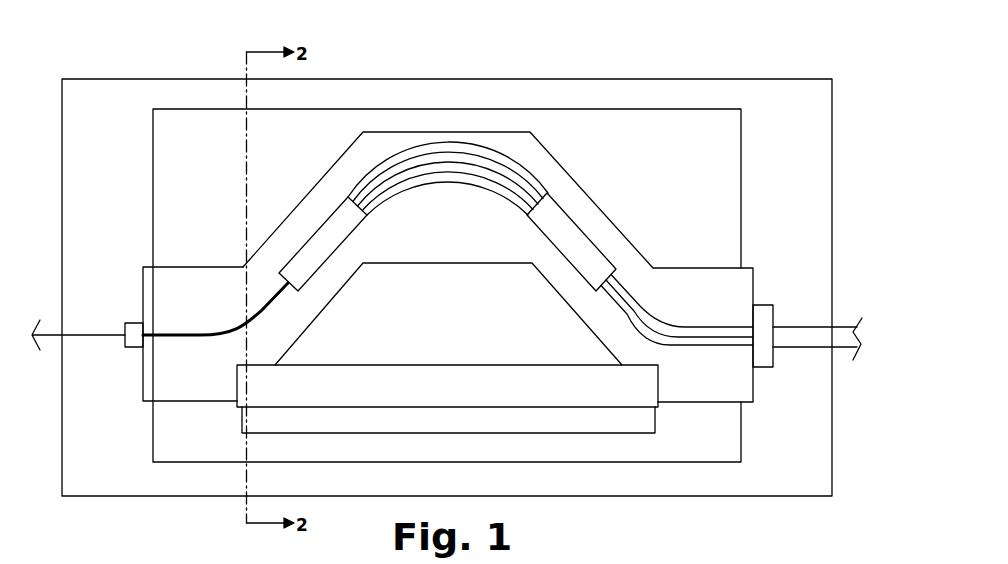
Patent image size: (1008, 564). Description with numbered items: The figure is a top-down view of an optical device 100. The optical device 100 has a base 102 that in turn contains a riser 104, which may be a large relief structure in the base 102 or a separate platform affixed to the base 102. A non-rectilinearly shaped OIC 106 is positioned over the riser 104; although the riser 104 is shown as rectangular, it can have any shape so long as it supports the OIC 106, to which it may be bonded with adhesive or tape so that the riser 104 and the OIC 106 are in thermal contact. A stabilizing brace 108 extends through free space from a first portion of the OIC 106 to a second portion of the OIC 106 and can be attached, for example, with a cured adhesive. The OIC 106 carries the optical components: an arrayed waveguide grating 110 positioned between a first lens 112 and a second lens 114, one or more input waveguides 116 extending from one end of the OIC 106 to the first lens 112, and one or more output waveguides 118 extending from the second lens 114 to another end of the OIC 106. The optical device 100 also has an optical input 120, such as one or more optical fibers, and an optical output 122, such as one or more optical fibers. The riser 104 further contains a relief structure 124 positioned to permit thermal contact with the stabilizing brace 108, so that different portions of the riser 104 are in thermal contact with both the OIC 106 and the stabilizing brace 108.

The optical device 100 is at (801, 70).
The base 102 is at (802, 465).
The riser 104 is at (723, 128).
The non-rectilinearly shaped OIC 106 is at (163, 290).
The stabilizing brace 108 is at (588, 395).
The arrayed waveguide grating 110 is at (483, 146).
The first lens 112 is at (334, 213).
The second lens 114 is at (596, 252).
The input waveguide 116 is at (184, 341).
The output waveguides 118 is at (718, 327).
The optical input 120 is at (80, 338).
The optical output 122 is at (853, 326).
The relief structure 124 is at (528, 418).